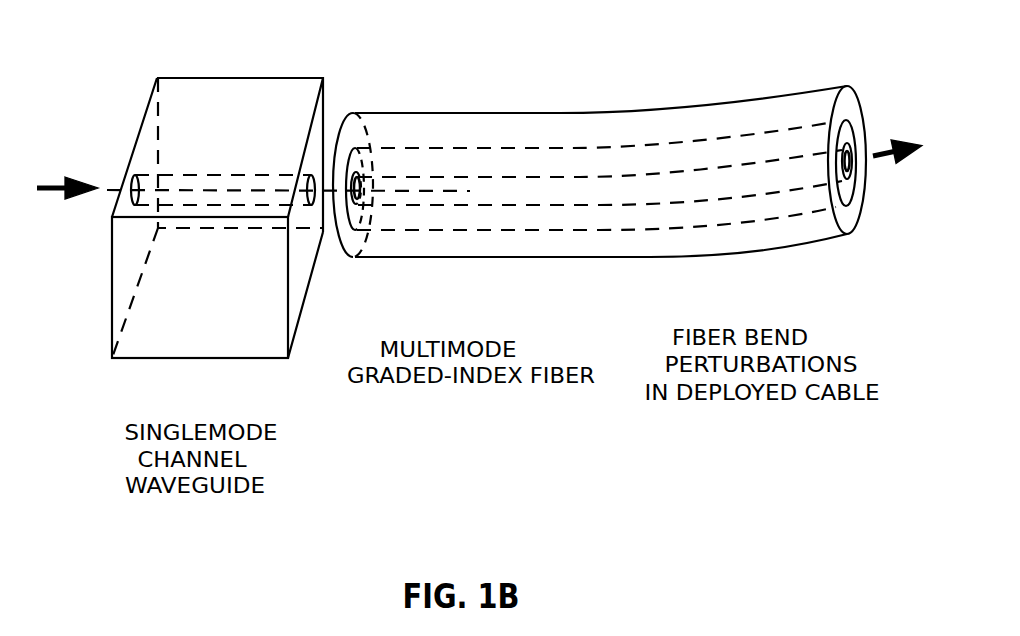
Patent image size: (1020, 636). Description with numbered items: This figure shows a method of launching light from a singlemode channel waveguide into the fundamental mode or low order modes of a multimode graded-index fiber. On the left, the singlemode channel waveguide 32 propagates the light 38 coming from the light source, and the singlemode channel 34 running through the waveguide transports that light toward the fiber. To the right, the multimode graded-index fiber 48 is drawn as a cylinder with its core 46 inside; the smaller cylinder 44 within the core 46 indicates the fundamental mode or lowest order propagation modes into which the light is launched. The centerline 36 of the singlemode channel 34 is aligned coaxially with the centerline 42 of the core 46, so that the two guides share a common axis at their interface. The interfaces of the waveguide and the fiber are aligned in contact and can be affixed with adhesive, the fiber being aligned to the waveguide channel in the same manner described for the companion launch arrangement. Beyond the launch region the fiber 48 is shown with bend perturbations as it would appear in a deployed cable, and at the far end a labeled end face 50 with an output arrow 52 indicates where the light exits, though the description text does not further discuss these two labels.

The singlemode channel waveguide 32 is at (300, 78).
The singlemode channel 34 is at (212, 173).
The centerline of singlemode channel 36 is at (238, 173).
The light 38 is at (55, 182).
The centerline of core 42 is at (408, 192).
The cylinder 44 is at (453, 177).
The core 46 is at (532, 147).
The multimode graded-index fiber 48 is at (608, 112).
The fiber output end face 50 is at (852, 125).
The output optical signal 52 is at (888, 156).